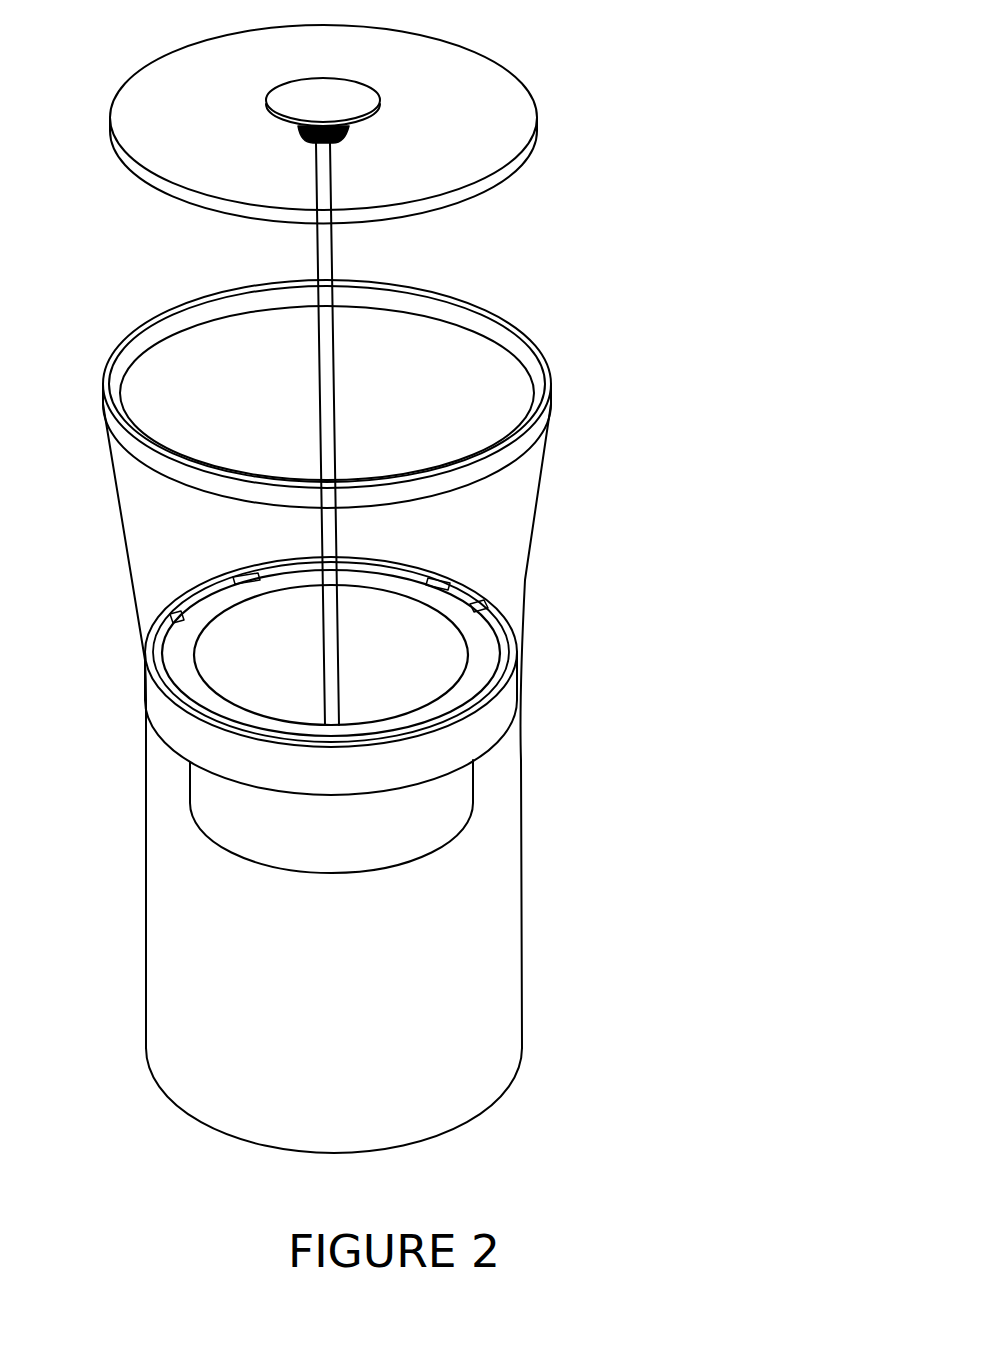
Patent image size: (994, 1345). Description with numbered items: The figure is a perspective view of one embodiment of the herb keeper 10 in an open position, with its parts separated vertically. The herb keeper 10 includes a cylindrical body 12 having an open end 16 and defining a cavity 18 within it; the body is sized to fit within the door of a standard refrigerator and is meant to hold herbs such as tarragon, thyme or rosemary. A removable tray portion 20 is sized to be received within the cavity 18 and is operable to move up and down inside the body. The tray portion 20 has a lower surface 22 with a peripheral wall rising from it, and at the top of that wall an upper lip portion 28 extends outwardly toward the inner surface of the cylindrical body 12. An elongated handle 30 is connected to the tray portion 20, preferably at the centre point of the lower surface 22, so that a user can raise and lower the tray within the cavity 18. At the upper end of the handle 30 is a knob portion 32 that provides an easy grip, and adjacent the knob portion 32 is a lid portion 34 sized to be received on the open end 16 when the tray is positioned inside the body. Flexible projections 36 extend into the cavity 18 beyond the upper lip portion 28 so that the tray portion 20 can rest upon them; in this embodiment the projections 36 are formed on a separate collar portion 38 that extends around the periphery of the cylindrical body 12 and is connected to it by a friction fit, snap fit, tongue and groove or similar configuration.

The herb keeper 10 is at (681, 496).
The cylindrical body 12 is at (532, 538).
The open end 16 is at (528, 345).
The cavity 18 is at (271, 401).
The tray portion 20 is at (380, 830).
The lower surface 22 is at (392, 872).
The upper lip portion 28 is at (483, 650).
The elongated handle 30 is at (332, 237).
The knob portion 32 is at (357, 98).
The lid portion 34 is at (520, 157).
The flexible projections 36 is at (197, 588).
The collar portion 38 is at (472, 730).